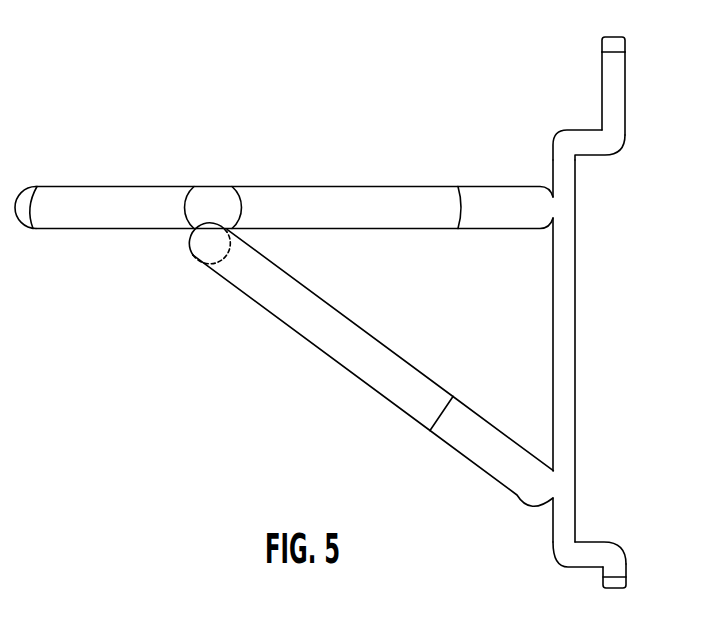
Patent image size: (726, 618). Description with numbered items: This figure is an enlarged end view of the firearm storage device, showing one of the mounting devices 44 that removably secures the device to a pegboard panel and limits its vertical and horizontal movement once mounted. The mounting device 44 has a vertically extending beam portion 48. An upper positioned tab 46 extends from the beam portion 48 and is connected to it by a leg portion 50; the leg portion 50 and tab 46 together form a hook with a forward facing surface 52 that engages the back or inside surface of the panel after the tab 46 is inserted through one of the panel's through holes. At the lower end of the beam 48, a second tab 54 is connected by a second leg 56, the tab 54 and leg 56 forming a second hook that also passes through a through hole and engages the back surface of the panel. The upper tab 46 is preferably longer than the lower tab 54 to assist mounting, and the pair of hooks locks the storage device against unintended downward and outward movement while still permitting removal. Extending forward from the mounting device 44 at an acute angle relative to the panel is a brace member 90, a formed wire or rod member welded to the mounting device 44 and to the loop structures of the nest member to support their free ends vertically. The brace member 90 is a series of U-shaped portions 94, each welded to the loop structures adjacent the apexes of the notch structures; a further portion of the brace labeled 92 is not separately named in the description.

The mounting device 44 is at (608, 305).
The upper positioned tab 46 is at (625, 58).
The beam portion 48 is at (575, 317).
The leg portion 50 is at (598, 155).
The forward facing surface 52 is at (602, 82).
The second tab 54 is at (626, 577).
The second leg 56 is at (600, 542).
The brace member 90 is at (440, 441).
The strut upper section 92 is at (400, 357).
The U-shaped portion 94 is at (192, 250).